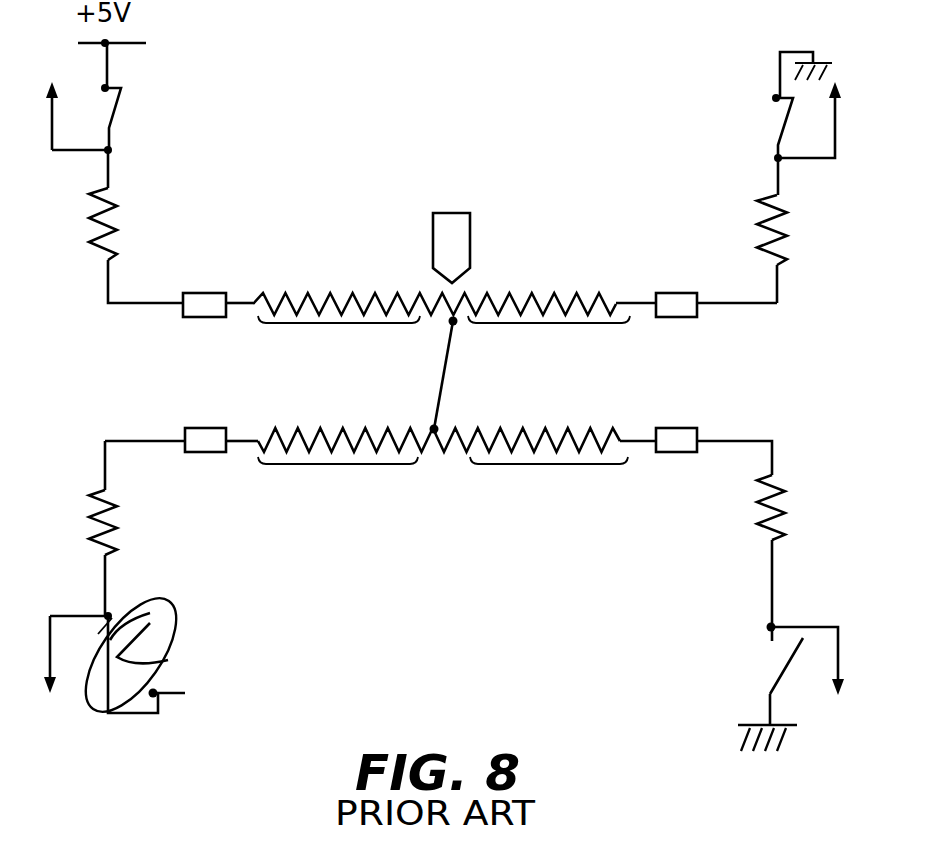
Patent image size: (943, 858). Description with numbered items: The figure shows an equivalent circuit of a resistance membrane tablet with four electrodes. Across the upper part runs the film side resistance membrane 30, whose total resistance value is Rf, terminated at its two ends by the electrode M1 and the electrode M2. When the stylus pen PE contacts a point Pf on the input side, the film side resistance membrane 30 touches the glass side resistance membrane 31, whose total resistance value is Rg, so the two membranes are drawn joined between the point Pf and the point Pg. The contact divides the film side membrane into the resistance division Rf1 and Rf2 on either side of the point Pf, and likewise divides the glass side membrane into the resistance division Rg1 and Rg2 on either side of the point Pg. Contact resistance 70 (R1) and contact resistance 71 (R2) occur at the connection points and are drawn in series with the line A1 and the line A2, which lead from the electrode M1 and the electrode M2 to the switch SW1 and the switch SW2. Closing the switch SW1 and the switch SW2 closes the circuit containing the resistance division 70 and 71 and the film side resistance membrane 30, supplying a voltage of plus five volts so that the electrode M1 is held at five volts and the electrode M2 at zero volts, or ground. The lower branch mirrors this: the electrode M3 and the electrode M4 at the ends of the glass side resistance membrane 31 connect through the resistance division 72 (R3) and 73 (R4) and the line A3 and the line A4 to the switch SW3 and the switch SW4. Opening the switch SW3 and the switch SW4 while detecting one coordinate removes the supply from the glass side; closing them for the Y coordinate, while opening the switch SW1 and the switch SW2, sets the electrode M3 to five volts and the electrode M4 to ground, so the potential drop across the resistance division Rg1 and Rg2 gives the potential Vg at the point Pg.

The contact resistance 70 is at (115, 205).
The contact resistance 71 is at (783, 230).
The resistance division 72 is at (113, 508).
The resistance division 73 is at (755, 512).
The film side resistance membrane 30 is at (585, 285).
The glass side resistance membrane 31 is at (438, 515).
The switch SW1 is at (118, 97).
The switch SW2 is at (778, 113).
The switch SW3 is at (165, 663).
The switch SW4 is at (780, 677).
The electrode M1 is at (200, 317).
The electrode M2 is at (680, 317).
The electrode M3 is at (206, 452).
The electrode M4 is at (683, 452).
The stylus pen PE is at (470, 238).
The point Pf is at (459, 373).
The point Pg is at (432, 440).
The line A1 is at (107, 180).
The line A2 is at (778, 178).
The line A3 is at (105, 590).
The line A4 is at (772, 580).
The resistance division Rf1 is at (339, 340).
The resistance division Rf2 is at (549, 342).
The resistance division Rg1 is at (338, 483).
The resistance division Rg2 is at (549, 481).